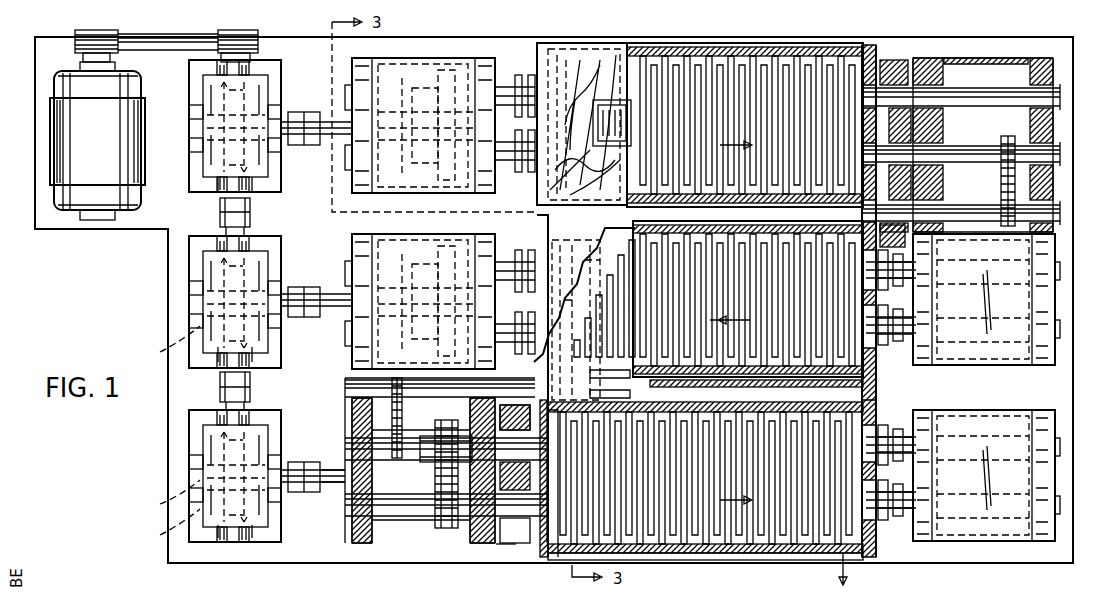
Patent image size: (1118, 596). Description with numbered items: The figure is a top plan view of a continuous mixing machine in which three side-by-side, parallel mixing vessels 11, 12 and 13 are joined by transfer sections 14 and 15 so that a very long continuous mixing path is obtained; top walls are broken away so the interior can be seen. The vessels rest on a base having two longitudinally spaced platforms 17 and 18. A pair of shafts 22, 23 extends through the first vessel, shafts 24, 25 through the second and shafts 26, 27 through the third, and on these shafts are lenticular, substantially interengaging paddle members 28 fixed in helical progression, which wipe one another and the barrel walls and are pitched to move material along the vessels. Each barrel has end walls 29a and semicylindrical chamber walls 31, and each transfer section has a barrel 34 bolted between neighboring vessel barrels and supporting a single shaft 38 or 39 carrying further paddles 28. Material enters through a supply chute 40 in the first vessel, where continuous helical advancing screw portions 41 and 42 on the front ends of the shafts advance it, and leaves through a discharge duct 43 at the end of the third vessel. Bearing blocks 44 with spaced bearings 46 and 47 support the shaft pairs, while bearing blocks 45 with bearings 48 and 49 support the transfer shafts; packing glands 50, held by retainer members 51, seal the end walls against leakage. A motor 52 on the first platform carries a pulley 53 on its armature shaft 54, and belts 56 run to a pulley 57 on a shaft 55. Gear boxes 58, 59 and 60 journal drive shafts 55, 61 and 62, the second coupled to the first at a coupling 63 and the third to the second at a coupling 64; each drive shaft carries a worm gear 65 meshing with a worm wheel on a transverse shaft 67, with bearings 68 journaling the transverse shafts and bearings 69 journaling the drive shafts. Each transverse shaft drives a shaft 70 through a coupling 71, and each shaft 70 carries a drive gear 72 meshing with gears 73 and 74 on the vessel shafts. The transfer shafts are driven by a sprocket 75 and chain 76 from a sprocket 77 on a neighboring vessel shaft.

The mixing vessel 11 is at (872, 52).
The mixing vessel 12 is at (878, 376).
The mixing vessel 13 is at (876, 552).
The transfer section 14 is at (826, 214).
The transfer section 15 is at (598, 384).
The platform 17 is at (446, 554).
The platform 18 is at (960, 560).
The shaft 22 is at (1014, 90).
The shaft 23 is at (962, 144).
The shaft 24 is at (898, 284).
The shaft 25 is at (892, 342).
The shaft 26 is at (918, 398).
The shaft 27 is at (896, 508).
The paddle member 28 is at (750, 70).
The end wall 29a is at (534, 46).
The chamber wall 31 is at (736, 217).
The barrel 34 is at (894, 240).
The shaft 38 is at (1064, 213).
The shaft 39 is at (344, 388).
The material supply chute 40 is at (544, 178).
The advancing screw portion 41 is at (622, 100).
The advancing screw portion 42 is at (640, 90).
The discharge duct 43 is at (880, 562).
The bearing block 44 is at (346, 530).
The bearing block 45 is at (342, 370).
The bearing 46 is at (484, 190).
The bearing 47 is at (334, 178).
The bearing 48 is at (496, 374).
The bearing 49 is at (350, 418).
The packing gland 50 is at (526, 538).
The retainer member 51 is at (496, 542).
The motor 52 is at (97, 141).
The pulley 53 is at (76, 25).
The armature shaft 54 is at (83, 59).
The shaft 55 is at (254, 31).
The belt 56 is at (164, 34).
The pulley 57 is at (222, 58).
The gear box 58 is at (280, 74).
The gear box 59 is at (260, 236).
The gear box 60 is at (262, 412).
The shaft 61 is at (225, 227).
The shaft 62 is at (220, 401).
The coupling 63 is at (220, 203).
The coupling 64 is at (248, 390).
The worm gear 65 is at (281, 589).
The shaft 67 is at (168, 435).
The bearing 68 is at (290, 452).
The bearing 69 is at (218, 185).
The shaft 70 is at (338, 481).
The coupling 71 is at (314, 468).
The drive gear 72 is at (412, 70).
The gear 73 is at (440, 66).
The gear 74 is at (444, 186).
The sprocket 75 is at (406, 380).
The chain 76 is at (352, 434).
The sprocket 77 is at (1002, 138).